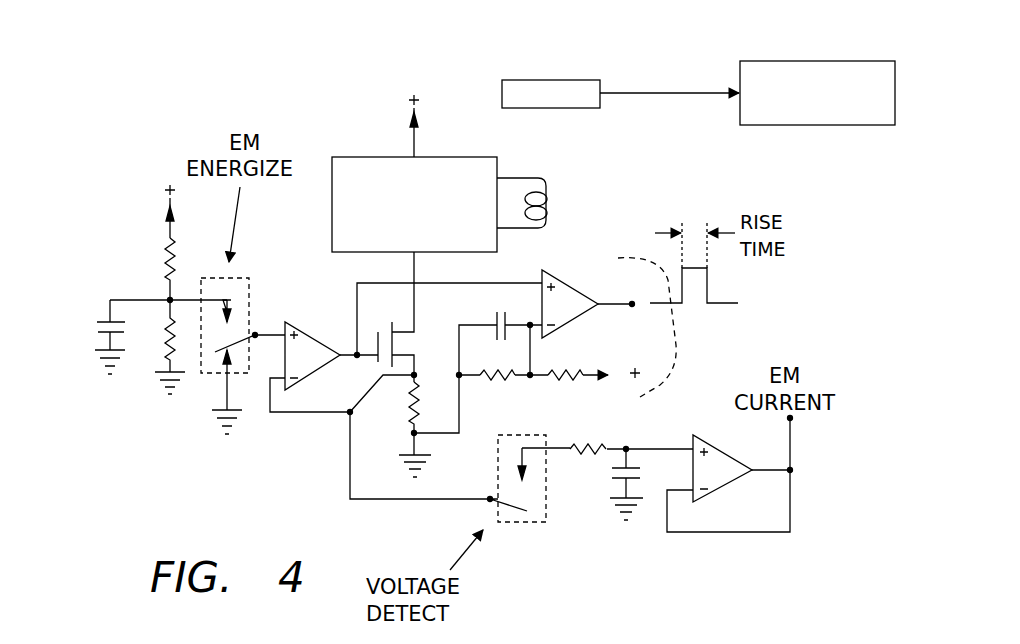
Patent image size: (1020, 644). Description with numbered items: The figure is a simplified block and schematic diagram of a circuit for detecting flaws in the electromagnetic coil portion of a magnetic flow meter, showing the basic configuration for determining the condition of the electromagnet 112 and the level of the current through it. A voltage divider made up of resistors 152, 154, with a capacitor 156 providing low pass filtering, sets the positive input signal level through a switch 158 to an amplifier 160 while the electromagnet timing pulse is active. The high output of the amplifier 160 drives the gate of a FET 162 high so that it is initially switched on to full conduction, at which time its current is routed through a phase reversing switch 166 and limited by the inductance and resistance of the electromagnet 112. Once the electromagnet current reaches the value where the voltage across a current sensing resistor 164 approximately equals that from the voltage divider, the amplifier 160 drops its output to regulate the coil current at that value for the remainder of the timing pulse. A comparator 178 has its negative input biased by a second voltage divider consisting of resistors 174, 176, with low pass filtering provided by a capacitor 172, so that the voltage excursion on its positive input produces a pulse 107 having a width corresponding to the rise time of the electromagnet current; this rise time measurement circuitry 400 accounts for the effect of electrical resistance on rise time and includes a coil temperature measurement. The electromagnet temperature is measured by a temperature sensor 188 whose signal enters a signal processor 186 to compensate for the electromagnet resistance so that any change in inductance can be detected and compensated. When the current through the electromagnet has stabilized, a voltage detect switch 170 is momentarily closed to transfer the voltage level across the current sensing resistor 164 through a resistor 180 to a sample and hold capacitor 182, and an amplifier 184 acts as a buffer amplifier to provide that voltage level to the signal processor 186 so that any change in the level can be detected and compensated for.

The resistor 152 is at (164, 258).
The resistor 154 is at (172, 345).
The capacitor 156 is at (100, 320).
The switch 158 is at (208, 373).
The amplifier 160 is at (308, 323).
The FET 162 is at (436, 302).
The current sensing resistor 164 is at (408, 410).
The phase reversing switch 166 is at (376, 157).
The voltage detect switch 170 is at (498, 472).
The capacitor 172 is at (473, 408).
The resistor 174 is at (490, 385).
The resistor 176 is at (583, 372).
The comparator 178 is at (573, 282).
The resistor 180 is at (574, 445).
The sample and hold capacitor 182 is at (612, 478).
The amplifier 184 is at (727, 488).
The signal processor 186 is at (740, 117).
The temperature sensor 188 is at (553, 108).
The electromagnet 112 is at (550, 205).
The rise time measurement circuitry 400 is at (622, 255).
The pulse 107 is at (697, 305).